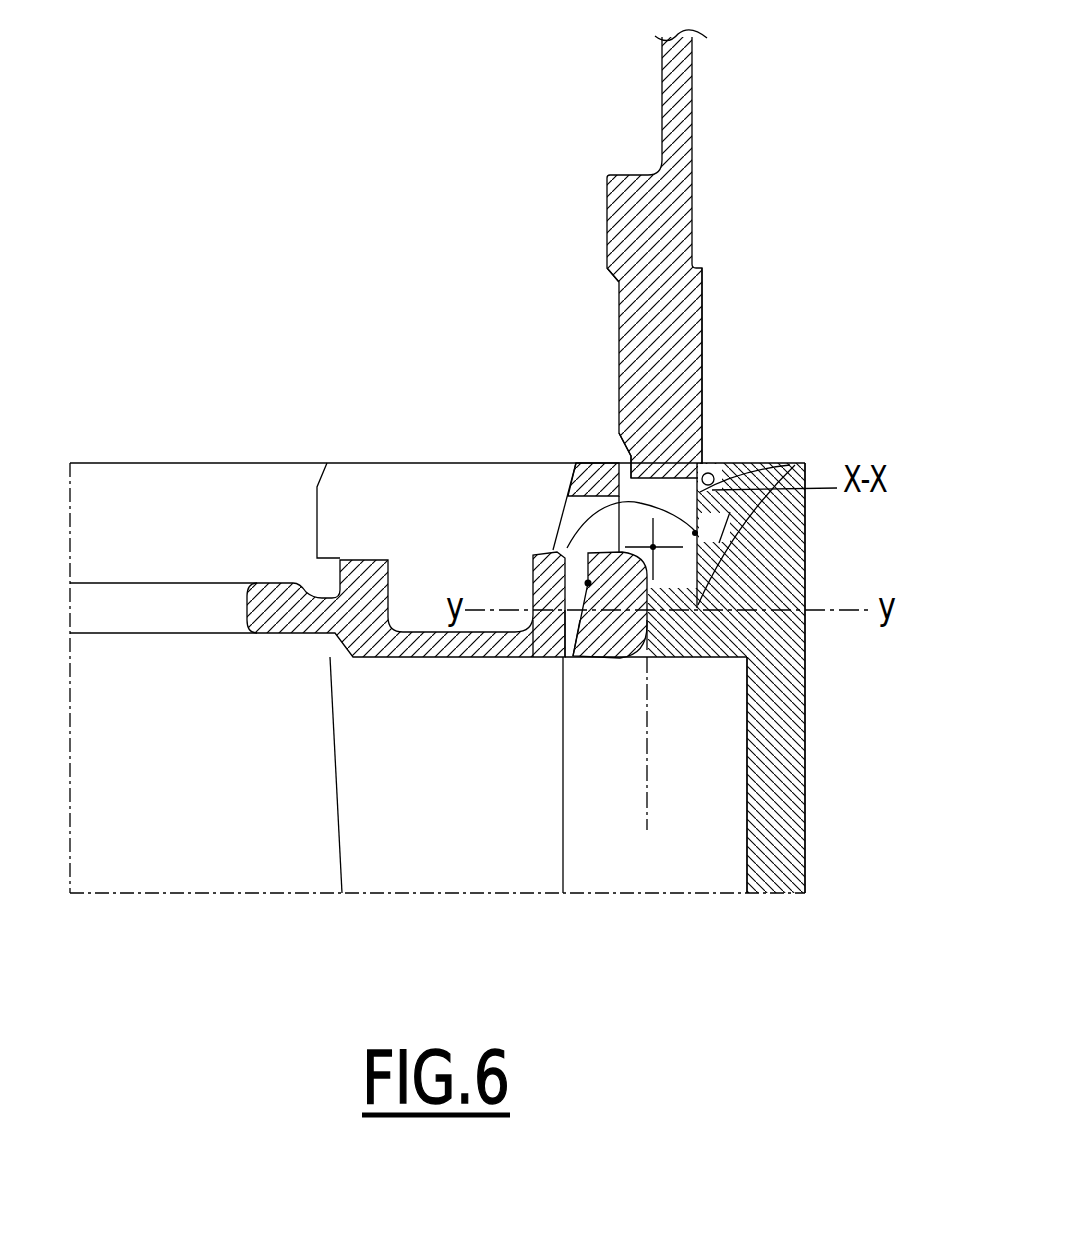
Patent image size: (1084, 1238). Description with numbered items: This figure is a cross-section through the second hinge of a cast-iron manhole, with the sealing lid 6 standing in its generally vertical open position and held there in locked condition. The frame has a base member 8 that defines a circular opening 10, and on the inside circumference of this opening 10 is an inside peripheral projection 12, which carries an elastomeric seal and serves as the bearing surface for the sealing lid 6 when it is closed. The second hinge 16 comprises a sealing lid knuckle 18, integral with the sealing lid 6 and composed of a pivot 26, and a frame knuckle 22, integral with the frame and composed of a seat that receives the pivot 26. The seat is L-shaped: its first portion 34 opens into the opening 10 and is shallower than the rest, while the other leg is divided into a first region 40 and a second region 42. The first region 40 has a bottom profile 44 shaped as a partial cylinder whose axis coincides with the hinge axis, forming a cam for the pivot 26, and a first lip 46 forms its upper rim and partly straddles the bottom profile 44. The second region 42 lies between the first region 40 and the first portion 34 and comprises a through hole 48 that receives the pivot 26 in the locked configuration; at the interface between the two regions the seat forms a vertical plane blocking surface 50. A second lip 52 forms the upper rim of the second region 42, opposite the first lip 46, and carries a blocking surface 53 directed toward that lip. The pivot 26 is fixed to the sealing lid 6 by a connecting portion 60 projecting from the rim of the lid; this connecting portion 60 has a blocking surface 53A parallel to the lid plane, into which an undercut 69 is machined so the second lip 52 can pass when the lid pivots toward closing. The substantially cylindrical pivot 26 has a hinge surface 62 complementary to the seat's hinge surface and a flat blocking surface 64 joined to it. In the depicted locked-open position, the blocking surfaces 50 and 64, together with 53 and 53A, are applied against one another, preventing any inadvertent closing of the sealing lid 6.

The sealing lid 6 is at (664, 204).
The base member 8 is at (435, 860).
The circular opening 10 is at (187, 483).
The inside peripheral projection 12 is at (295, 617).
The second hinge 16 is at (852, 432).
The sealing lid knuckle 18 is at (588, 583).
The frame knuckle 22 is at (533, 665).
The pivot 26 is at (627, 657).
The first portion of the seat 34 is at (468, 513).
The first region 40 is at (747, 812).
The second region 42 is at (647, 812).
The bottom profile 44 is at (575, 518).
The first lip 46 is at (788, 465).
The through hole 48 is at (560, 664).
The plane blocking surface 50 is at (641, 655).
The second lip 52 is at (595, 462).
The blocking surface 53 is at (632, 456).
The blocking surface 53A is at (617, 310).
The connecting portion 60 is at (688, 380).
The hinge surface 62 is at (568, 668).
The flat blocking surface 64 is at (662, 592).
The undercut 69 is at (712, 468).